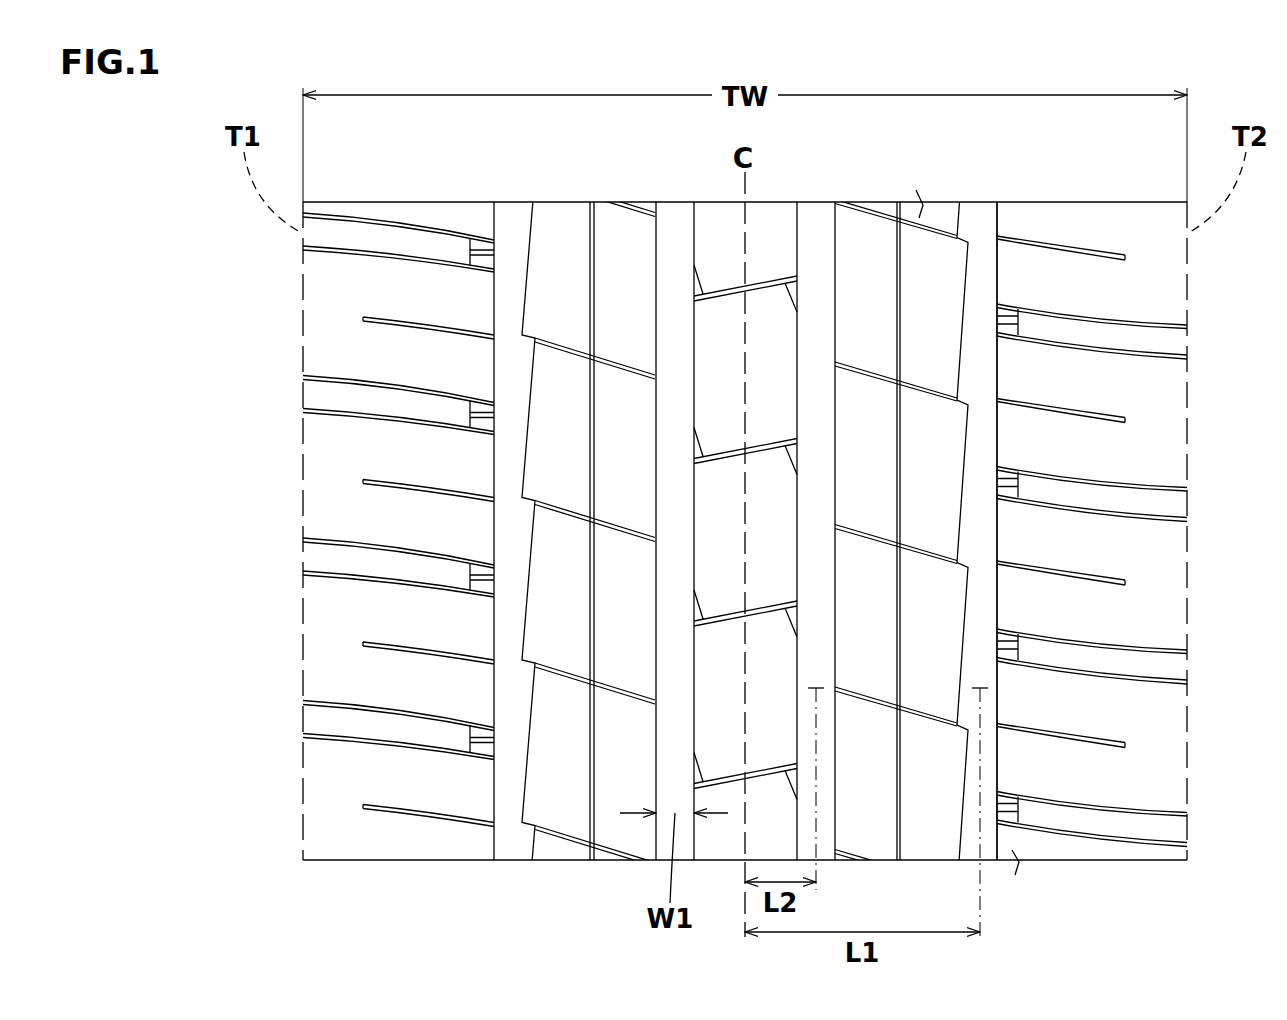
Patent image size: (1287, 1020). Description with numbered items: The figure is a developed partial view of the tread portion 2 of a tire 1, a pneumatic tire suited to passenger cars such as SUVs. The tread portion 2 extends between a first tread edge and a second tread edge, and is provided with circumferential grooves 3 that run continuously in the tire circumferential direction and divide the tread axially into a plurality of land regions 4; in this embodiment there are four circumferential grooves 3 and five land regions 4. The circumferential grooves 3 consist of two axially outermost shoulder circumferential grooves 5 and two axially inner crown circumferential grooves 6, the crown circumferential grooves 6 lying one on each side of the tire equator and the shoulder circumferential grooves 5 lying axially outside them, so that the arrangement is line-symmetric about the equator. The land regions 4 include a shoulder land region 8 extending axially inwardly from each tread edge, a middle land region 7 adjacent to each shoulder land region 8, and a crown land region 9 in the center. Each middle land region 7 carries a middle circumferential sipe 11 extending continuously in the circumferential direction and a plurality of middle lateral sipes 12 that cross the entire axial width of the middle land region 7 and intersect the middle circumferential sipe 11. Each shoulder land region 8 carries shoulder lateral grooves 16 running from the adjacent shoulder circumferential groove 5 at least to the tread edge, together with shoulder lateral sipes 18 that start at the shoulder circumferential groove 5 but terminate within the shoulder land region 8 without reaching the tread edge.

The tire 1 is at (1035, 192).
The tread portion 2 is at (468, 192).
The circumferential grooves 3 is at (975, 290).
The land regions 4 is at (352, 283).
The shoulder circumferential grooves 5 is at (510, 247).
The crown circumferential grooves 6 is at (673, 245).
The middle land region 7 is at (563, 247).
The shoulder land region 8 is at (412, 283).
The crown land region 9 is at (770, 242).
The middle circumferential sipe 11 is at (590, 395).
The middle lateral sipes 12 is at (565, 665).
The shoulder lateral grooves 16 is at (383, 397).
The shoulder lateral sipes 18 is at (418, 487).